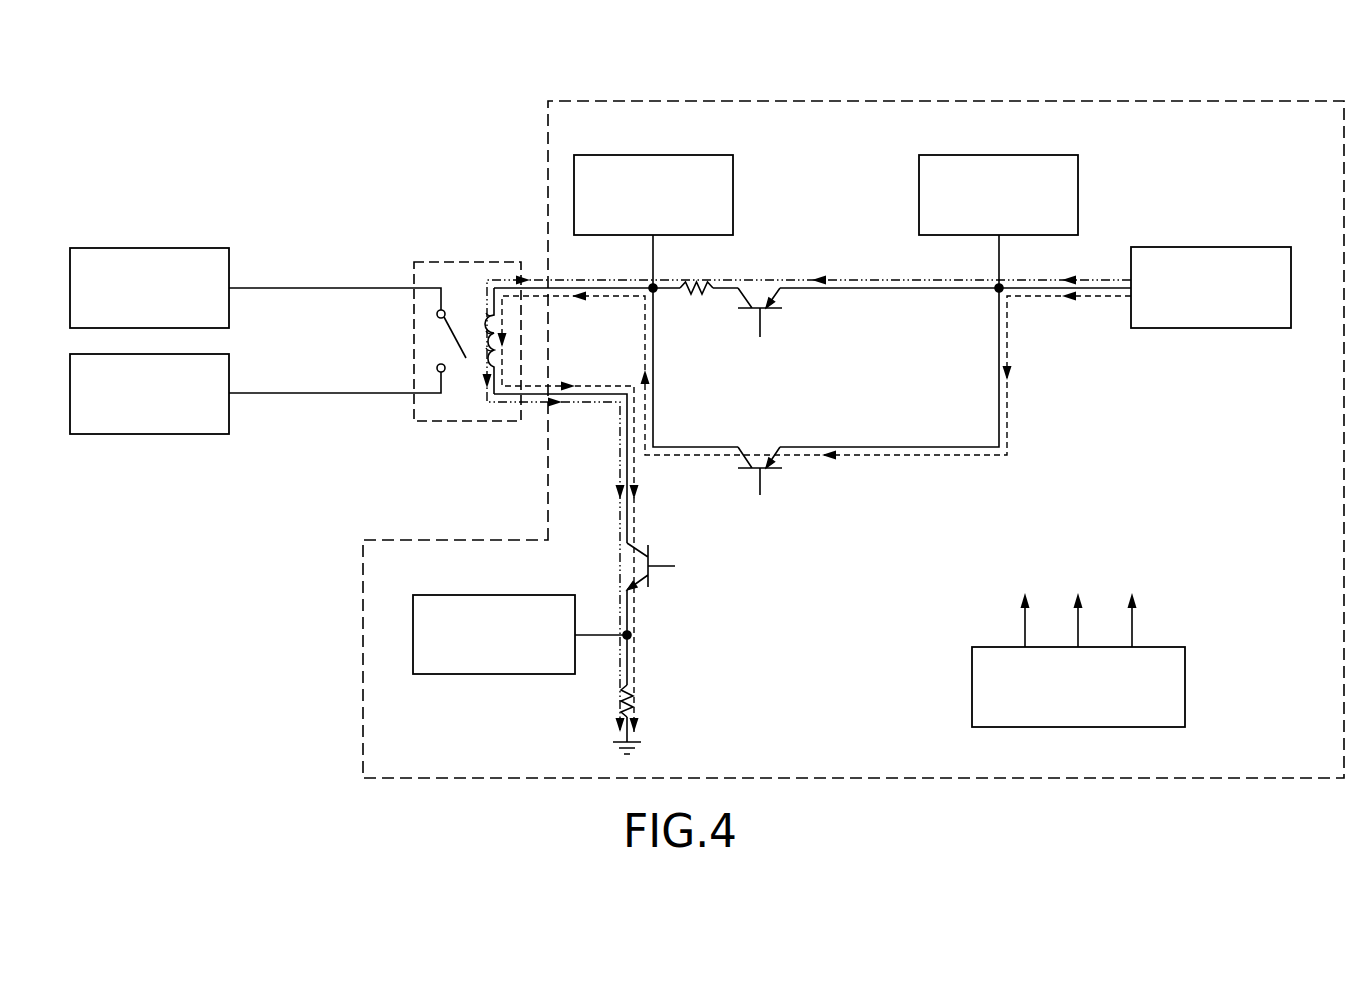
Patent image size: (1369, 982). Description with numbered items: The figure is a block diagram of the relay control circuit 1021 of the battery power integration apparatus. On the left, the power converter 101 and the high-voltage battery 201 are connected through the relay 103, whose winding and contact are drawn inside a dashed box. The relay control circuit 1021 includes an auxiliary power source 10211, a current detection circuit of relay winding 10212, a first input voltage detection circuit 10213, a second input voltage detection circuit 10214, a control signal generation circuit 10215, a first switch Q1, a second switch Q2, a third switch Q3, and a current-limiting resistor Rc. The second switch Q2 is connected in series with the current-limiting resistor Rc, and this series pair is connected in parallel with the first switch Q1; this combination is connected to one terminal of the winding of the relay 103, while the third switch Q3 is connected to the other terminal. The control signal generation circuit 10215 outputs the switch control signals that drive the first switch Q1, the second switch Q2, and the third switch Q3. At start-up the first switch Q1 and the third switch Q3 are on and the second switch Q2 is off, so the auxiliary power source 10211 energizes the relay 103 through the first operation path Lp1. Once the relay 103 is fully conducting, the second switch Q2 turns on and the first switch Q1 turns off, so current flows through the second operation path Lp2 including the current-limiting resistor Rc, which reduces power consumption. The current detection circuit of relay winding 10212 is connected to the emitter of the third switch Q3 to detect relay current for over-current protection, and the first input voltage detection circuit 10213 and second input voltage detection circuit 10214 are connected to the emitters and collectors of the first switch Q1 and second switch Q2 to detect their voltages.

The power converter 101 is at (149, 252).
The high-voltage battery 201 is at (149, 428).
The relay 103 is at (467, 268).
The relay control circuit 1021 is at (945, 106).
The auxiliary power source 10211 is at (1212, 252).
The current detection circuit of relay winding 10212 is at (493, 598).
The first input voltage detection circuit 10213 is at (1000, 160).
The second input voltage detection circuit 10214 is at (655, 160).
The control signal generation circuit 10215 is at (1158, 652).
The first operation path Lp1 is at (942, 455).
The second operation path Lp2 is at (883, 278).
The first switch Q1 is at (761, 479).
The second switch Q2 is at (761, 319).
The third switch Q3 is at (655, 566).
The current-limiting resistor Rc is at (696, 273).